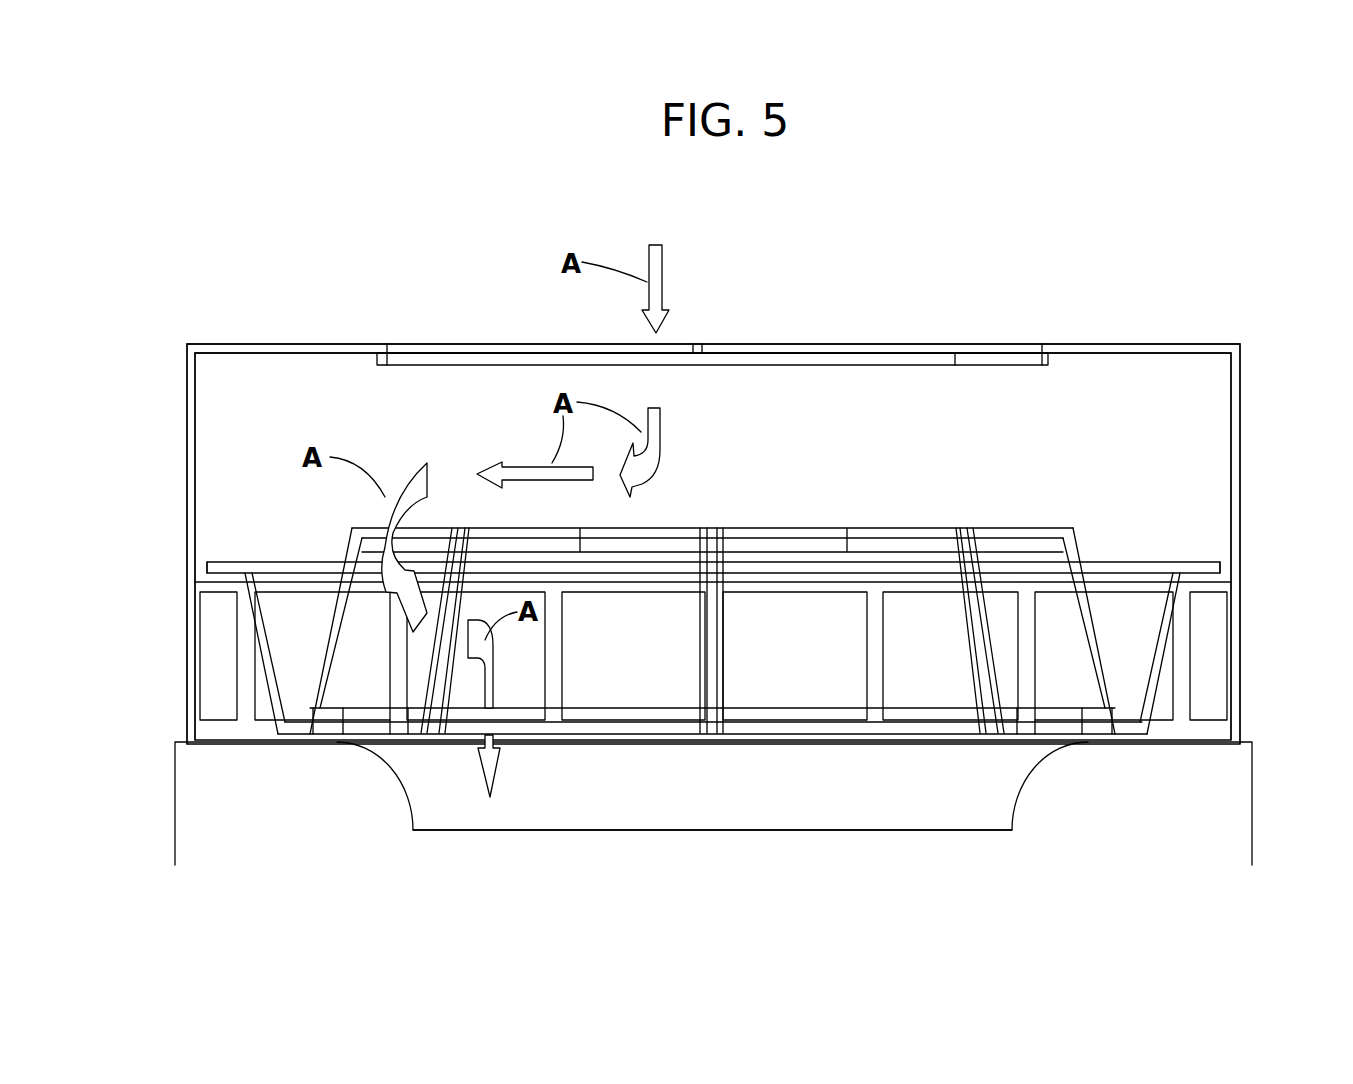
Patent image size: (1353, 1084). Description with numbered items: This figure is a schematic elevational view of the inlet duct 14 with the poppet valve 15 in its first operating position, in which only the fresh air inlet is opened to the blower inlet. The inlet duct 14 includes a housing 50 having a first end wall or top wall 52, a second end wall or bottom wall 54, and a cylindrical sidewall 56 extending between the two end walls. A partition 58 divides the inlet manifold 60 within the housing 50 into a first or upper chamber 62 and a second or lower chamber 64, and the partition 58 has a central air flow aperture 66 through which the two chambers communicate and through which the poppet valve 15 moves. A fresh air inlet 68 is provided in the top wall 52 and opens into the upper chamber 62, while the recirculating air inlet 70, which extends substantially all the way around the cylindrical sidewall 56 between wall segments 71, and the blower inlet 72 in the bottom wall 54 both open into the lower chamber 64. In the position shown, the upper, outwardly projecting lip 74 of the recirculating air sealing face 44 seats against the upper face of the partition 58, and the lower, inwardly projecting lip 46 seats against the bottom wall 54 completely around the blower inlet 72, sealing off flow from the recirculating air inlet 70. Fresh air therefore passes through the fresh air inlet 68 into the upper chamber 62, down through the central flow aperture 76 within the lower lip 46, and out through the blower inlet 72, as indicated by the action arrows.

The inlet duct 14 is at (1220, 318).
The poppet valve 15 is at (266, 468).
The recirculating air sealing face 44 is at (265, 672).
The lower, inwardly projecting lip 46 is at (297, 727).
The housing 50 is at (1237, 380).
The first end wall or top wall 52 is at (237, 345).
The second end wall or bottom wall 54 is at (267, 745).
The cylindrical sidewall 56 is at (190, 555).
The partition 58 is at (212, 580).
The inlet manifold 60 is at (1222, 459).
The first or upper chamber 62 is at (1018, 420).
The second or lower chamber 64 is at (757, 678).
The central air flow aperture 66 is at (1115, 577).
The fresh air inlet 68 is at (817, 352).
The recirculating air inlet 70 is at (634, 687).
The wall segments 71 is at (565, 628).
The blower inlet 72 is at (580, 743).
The upper, outwardly projecting lip 74 is at (224, 562).
The central flow aperture 76 is at (650, 712).